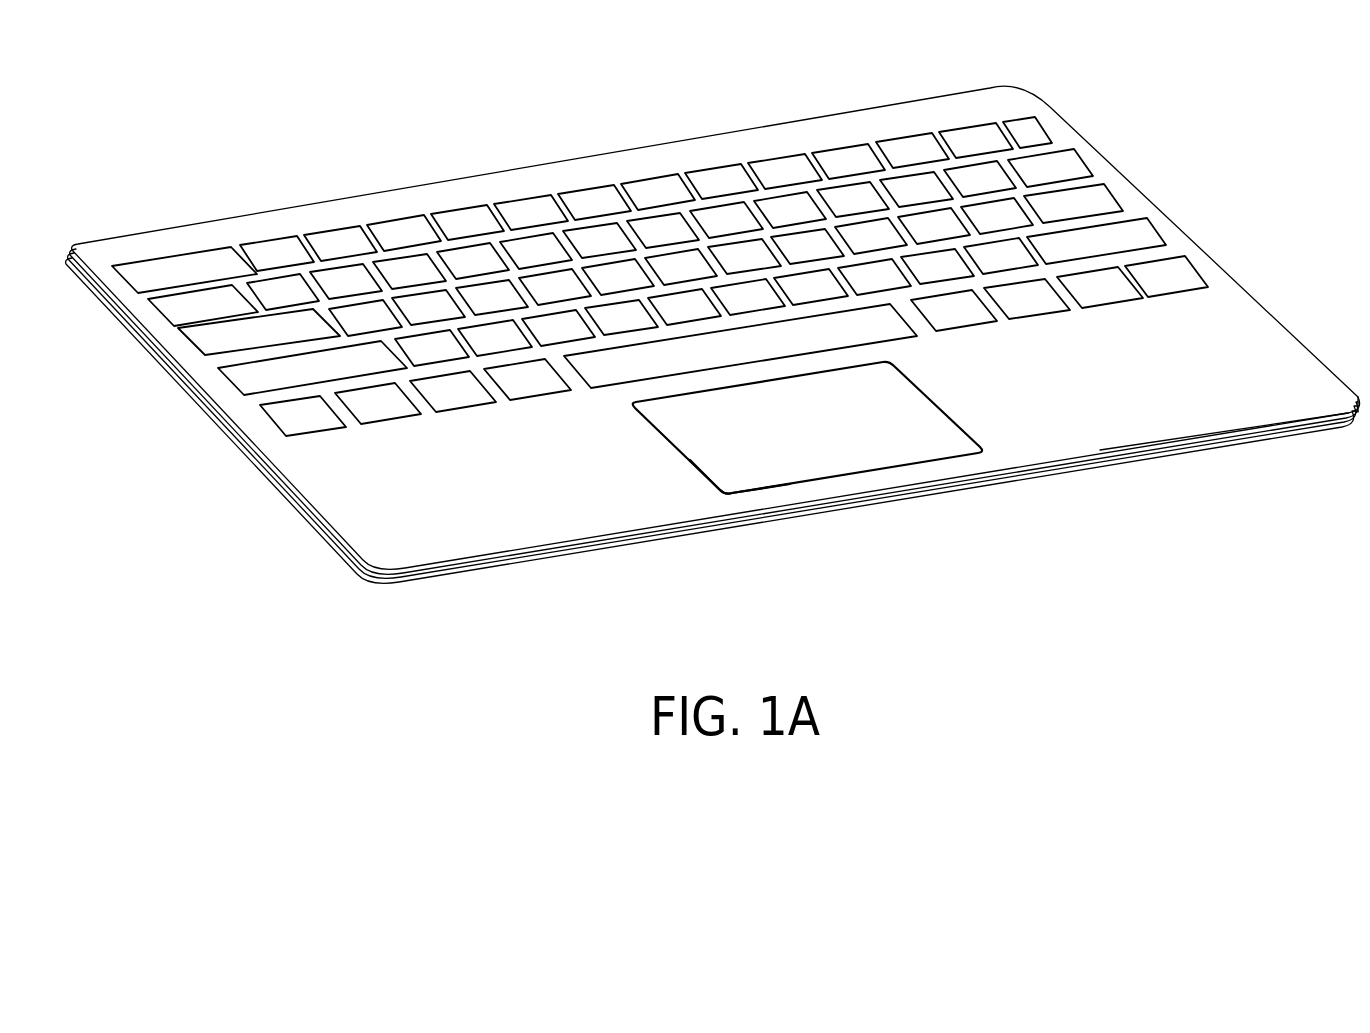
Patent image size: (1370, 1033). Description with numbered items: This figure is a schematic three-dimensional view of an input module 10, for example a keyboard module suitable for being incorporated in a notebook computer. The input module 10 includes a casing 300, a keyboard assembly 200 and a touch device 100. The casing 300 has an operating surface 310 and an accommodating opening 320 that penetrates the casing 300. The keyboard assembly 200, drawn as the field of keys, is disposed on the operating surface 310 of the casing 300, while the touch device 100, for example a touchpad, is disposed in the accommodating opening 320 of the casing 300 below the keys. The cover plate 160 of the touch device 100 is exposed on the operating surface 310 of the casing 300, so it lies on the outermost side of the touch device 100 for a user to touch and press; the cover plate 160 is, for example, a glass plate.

The input module 10 is at (716, 378).
The keyboard assembly 200 is at (1108, 205).
The casing 300 is at (1247, 360).
The operating surface 310 is at (1075, 410).
The accommodating opening 320 is at (702, 473).
The cover plate 160 is at (826, 496).
The touch device 100 is at (867, 438).